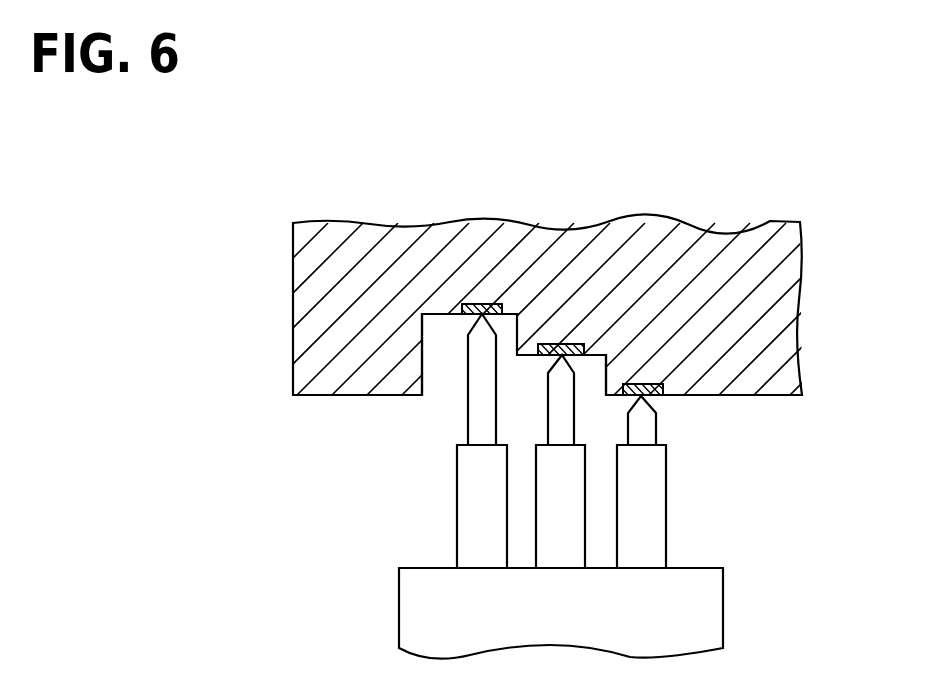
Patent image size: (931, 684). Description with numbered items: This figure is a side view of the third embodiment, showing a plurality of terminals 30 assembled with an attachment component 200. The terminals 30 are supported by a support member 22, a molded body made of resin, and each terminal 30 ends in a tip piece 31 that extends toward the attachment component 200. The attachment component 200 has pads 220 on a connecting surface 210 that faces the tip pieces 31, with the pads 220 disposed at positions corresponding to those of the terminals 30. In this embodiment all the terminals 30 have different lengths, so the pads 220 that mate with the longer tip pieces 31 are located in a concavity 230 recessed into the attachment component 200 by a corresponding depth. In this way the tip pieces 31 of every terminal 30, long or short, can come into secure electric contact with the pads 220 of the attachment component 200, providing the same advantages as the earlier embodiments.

The support member 22 is at (700, 612).
The terminals 30 is at (480, 503).
The tip pieces 31 is at (480, 410).
The attachment component 200 is at (725, 231).
The connecting surface 210 is at (737, 395).
The pads 220 is at (478, 303).
The concavity 230 is at (443, 333).